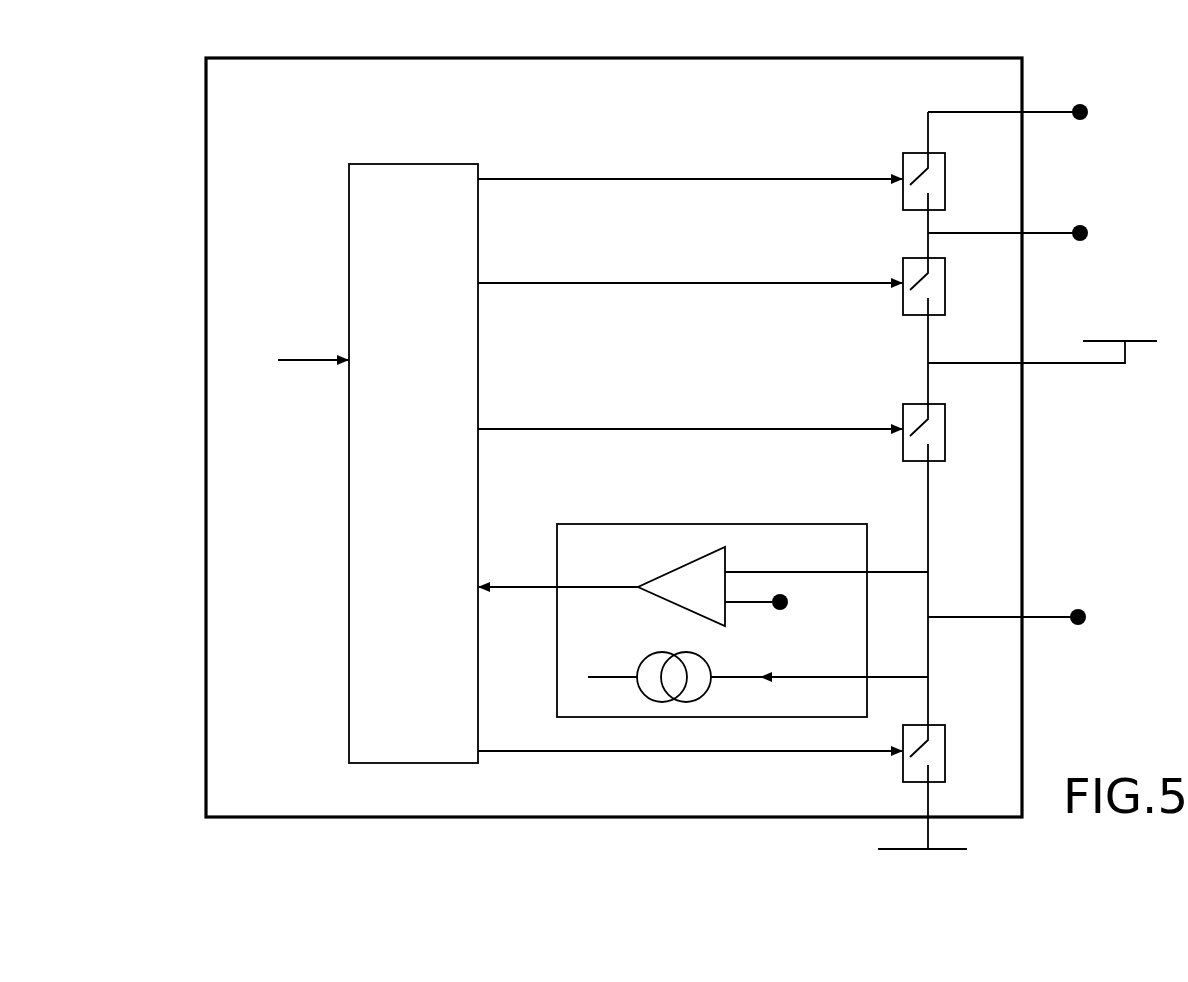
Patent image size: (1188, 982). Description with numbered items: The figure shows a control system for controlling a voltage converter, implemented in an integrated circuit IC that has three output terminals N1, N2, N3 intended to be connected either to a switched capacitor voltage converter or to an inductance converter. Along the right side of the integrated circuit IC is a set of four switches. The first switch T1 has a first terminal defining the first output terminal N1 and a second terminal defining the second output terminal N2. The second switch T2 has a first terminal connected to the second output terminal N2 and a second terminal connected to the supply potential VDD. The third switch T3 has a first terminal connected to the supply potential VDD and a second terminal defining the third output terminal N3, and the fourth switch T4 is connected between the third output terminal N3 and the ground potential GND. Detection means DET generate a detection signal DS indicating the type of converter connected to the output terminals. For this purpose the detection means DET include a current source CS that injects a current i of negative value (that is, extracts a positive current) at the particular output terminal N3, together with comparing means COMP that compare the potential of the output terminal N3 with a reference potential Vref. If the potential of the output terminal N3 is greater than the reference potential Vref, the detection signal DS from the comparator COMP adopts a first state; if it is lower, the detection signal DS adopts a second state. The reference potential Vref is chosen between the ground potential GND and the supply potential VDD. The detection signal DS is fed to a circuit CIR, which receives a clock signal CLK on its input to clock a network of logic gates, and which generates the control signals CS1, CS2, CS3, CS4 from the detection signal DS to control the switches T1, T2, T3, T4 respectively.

The integrated circuit IC is at (205, 338).
The circuit CIR is at (425, 163).
The clock signal CLK is at (317, 358).
The control signal CS1 is at (535, 178).
The control signal CS2 is at (535, 283).
The control signal CS3 is at (535, 429).
The control signal CS4 is at (525, 750).
The detection signal DS is at (532, 587).
The detection means DET is at (658, 524).
The comparing means COMP is at (783, 586).
The reference potential Vref is at (793, 601).
The current source CS is at (758, 665).
The current i is at (765, 655).
The first switch T1 is at (948, 181).
The second switch T2 is at (949, 286).
The third switch T3 is at (949, 432).
The fourth switch T4 is at (950, 753).
The first output terminal N1 is at (1039, 114).
The second output terminal N2 is at (1040, 232).
The third output terminal N3 is at (1039, 617).
The supply potential VDD is at (1042, 334).
The ground potential GND is at (922, 835).